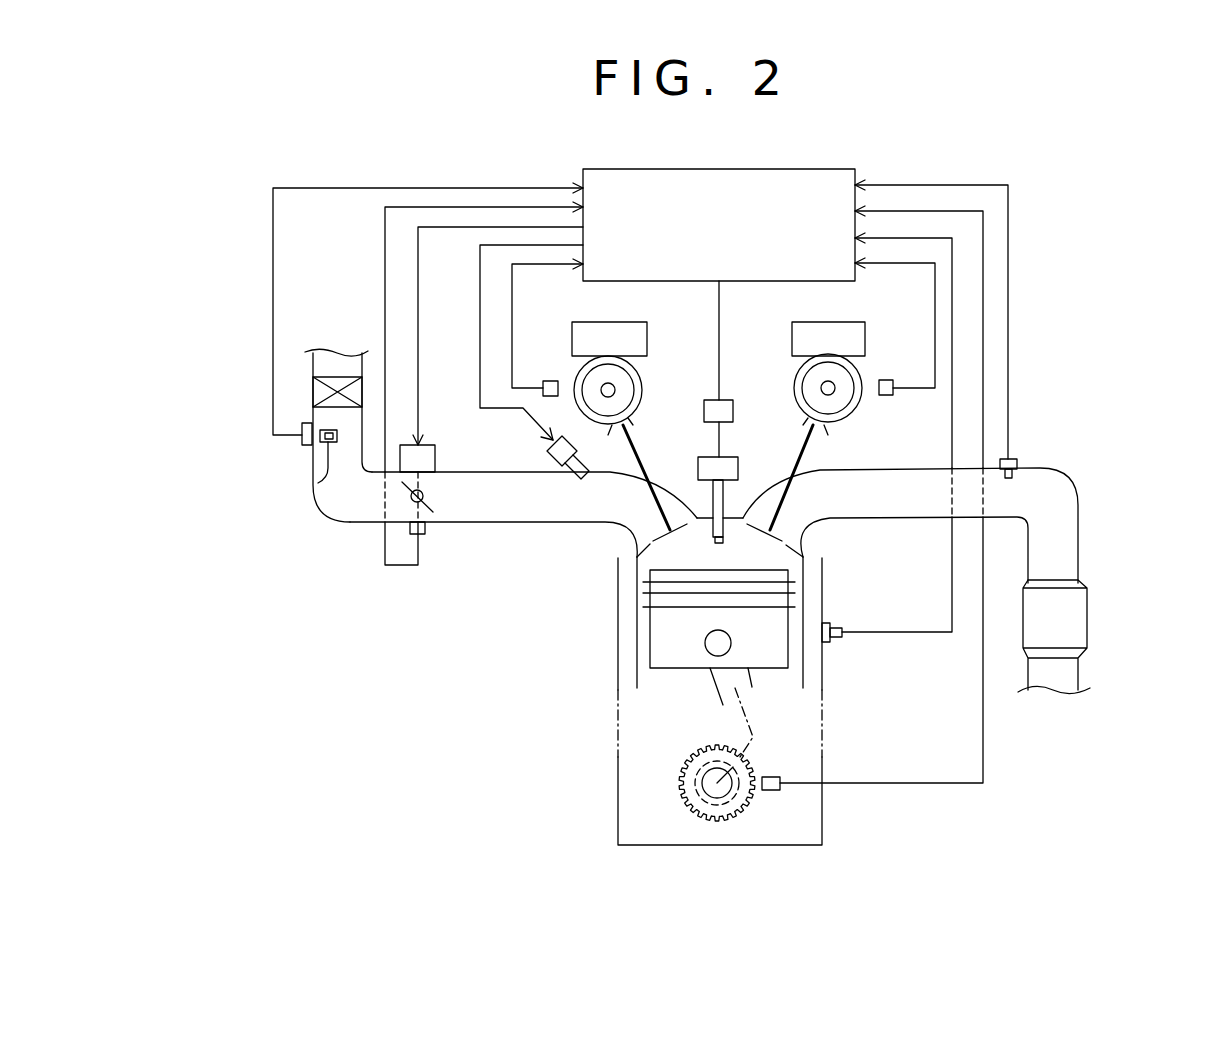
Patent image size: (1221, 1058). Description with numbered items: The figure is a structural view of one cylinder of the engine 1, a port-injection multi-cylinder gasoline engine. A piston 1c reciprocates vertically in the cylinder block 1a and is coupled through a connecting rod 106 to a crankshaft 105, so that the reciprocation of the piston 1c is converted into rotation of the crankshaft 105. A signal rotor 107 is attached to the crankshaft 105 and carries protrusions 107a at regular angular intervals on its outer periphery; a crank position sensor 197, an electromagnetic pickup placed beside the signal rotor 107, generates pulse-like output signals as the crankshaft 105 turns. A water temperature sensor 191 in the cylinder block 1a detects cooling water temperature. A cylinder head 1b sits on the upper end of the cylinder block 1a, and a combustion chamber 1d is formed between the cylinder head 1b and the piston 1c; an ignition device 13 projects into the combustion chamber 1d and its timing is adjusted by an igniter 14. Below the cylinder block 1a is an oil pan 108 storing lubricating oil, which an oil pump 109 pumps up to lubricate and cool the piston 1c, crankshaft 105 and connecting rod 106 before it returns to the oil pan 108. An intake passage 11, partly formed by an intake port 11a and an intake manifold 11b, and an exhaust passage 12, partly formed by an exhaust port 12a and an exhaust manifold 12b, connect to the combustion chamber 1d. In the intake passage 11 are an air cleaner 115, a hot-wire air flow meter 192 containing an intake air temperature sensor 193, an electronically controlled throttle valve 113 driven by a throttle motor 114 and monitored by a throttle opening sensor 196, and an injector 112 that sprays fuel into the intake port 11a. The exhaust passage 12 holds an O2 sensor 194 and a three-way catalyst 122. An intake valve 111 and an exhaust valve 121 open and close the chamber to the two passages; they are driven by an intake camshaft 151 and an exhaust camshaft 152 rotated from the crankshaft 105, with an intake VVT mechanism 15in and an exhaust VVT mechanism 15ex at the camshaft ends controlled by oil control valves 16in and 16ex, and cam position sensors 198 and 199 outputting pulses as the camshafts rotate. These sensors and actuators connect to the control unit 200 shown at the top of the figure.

The engine 1 is at (492, 703).
The cylinder block 1a is at (822, 672).
The cylinder head 1b is at (740, 512).
The piston 1c is at (648, 655).
The combustion chamber 1d is at (677, 560).
The intake passage 11 is at (352, 512).
The intake port 11a is at (620, 527).
The intake manifold 11b is at (505, 535).
The exhaust passage 12 is at (1000, 512).
The exhaust port 12a is at (793, 527).
The exhaust manifold 12b is at (923, 523).
The ignition device 13 is at (703, 458).
The igniter 14 is at (733, 411).
The intake VVT mechanism 15in is at (654, 395).
The exhaust VVT mechanism 15ex is at (792, 390).
The oil control valve 16in is at (618, 322).
The oil control valve 16ex is at (835, 322).
The crankshaft 105 is at (693, 783).
The connecting rod 106 is at (740, 687).
The signal rotor 107 is at (690, 758).
The protrusions 107a is at (740, 810).
The oil pan 108 is at (618, 825).
The oil pump 109 is at (740, 798).
The intake valve 111 is at (637, 479).
The injector 112 is at (548, 451).
The throttle valve 113 is at (425, 493).
The throttle motor 114 is at (435, 447).
The air cleaner 115 is at (333, 378).
The exhaust valve 121 is at (808, 497).
The three-way catalyst 122 is at (1087, 613).
The intake camshaft 151 is at (614, 393).
The exhaust camshaft 152 is at (834, 393).
The water temperature sensor 191 is at (826, 625).
The air flow meter 192 is at (302, 445).
The intake air temperature sensor 193 is at (318, 483).
The O2 sensor 194 is at (1017, 462).
The throttle opening sensor 196 is at (425, 531).
The crank position sensor 197 is at (773, 777).
The cam position sensor 198 is at (548, 379).
The cam position sensor 199 is at (890, 378).
The ECU (electronic control unit) 200 is at (797, 169).